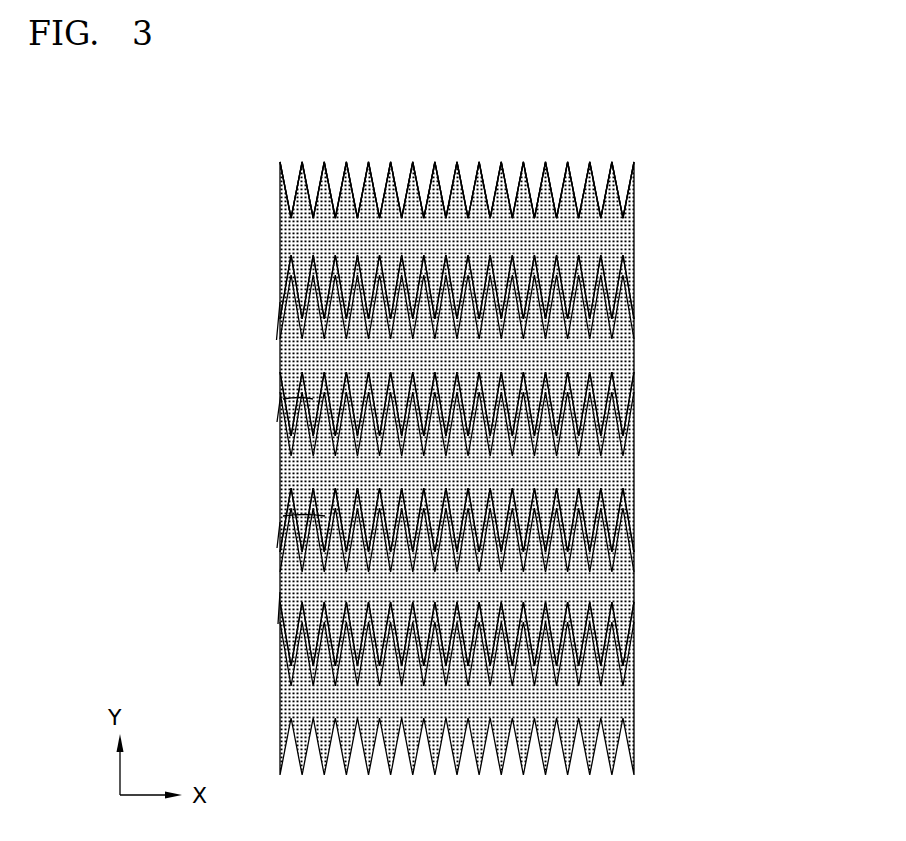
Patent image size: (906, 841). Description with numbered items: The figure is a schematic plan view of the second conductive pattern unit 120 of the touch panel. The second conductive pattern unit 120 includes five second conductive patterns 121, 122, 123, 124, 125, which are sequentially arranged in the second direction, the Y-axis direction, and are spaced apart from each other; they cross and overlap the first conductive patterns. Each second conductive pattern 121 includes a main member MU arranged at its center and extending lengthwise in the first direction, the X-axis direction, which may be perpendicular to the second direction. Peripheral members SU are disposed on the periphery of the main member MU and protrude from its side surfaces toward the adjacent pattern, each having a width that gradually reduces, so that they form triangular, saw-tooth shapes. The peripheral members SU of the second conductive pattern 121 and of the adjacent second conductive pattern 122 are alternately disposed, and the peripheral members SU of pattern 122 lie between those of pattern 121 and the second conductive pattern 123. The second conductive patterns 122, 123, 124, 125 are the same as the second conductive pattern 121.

The second conductive pattern unit 120 is at (539, 428).
The second conductive pattern 121 is at (700, 175).
The second conductive pattern 122 is at (700, 291).
The second conductive pattern 123 is at (700, 407).
The second conductive pattern 124 is at (700, 522).
The second conductive pattern 125 is at (700, 638).
The peripheral members SU is at (612, 198).
The main member MU is at (612, 238).